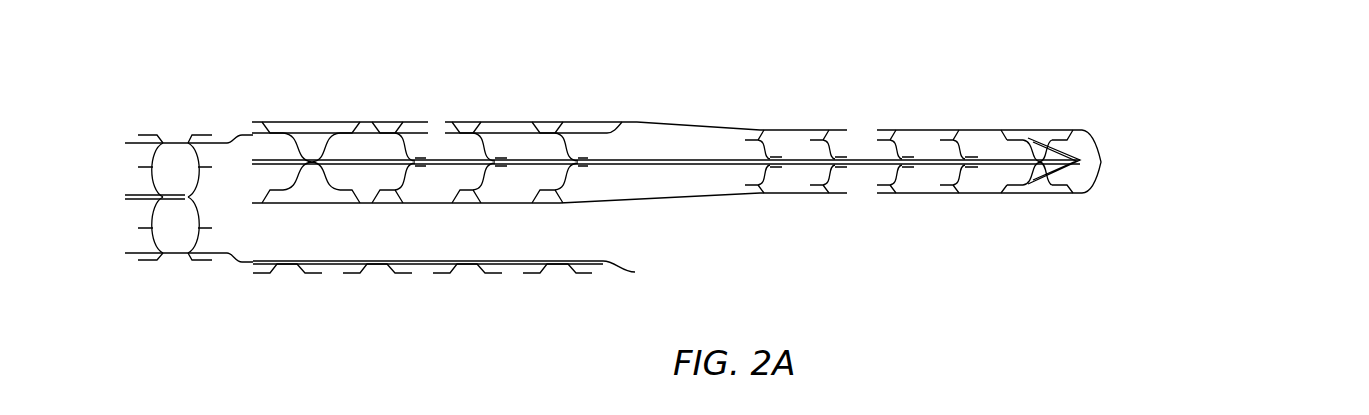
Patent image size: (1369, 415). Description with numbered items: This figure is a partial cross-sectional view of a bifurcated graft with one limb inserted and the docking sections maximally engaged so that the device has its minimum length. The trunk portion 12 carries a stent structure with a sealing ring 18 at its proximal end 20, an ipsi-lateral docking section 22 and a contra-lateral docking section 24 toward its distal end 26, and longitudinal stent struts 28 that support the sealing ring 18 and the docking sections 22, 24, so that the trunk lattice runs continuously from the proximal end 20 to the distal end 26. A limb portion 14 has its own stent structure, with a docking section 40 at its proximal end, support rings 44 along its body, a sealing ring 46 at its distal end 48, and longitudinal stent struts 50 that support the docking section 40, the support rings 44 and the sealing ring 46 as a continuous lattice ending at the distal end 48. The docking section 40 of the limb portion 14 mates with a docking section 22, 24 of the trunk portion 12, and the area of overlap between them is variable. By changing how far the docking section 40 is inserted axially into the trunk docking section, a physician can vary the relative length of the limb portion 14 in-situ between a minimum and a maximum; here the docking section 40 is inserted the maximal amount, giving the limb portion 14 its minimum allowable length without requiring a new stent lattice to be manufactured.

The trunk portion 12 is at (172, 270).
The limb portion 14 is at (738, 219).
The sealing ring 18 is at (163, 143).
The proximal end 20 is at (121, 116).
The ipsi-lateral docking section 22 is at (638, 297).
The contra-lateral docking section 24 is at (637, 97).
The distal end 26 is at (645, 260).
The longitudinal stent struts 28 is at (140, 198).
The docking section 40 is at (564, 224).
The support rings 44 is at (813, 140).
The sealing ring 46 is at (1025, 139).
The distal end 48 is at (1116, 198).
The longitudinal stent struts 50 is at (660, 160).